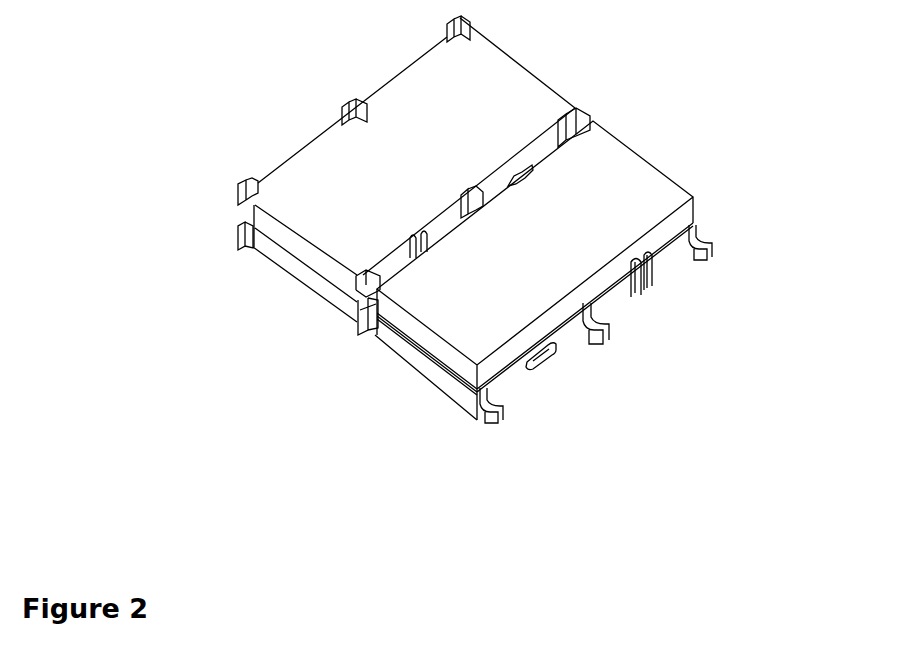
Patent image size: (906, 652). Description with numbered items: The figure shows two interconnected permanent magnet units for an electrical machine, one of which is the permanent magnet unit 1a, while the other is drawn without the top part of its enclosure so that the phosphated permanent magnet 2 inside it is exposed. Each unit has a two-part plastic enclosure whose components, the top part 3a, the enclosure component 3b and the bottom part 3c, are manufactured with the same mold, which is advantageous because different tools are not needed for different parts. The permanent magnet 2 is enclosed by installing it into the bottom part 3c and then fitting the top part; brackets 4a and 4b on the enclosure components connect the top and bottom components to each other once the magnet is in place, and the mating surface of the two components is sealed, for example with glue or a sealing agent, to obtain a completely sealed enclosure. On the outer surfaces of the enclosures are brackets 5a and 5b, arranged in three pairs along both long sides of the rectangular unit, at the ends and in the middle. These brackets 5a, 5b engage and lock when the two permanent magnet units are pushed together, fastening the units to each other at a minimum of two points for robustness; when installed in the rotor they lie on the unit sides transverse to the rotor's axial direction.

The permanent magnet unit 1a is at (324, 211).
The permanent magnet 2 is at (607, 328).
The top part of plastic enclosure 3a is at (437, 110).
The enclosure component 3b is at (293, 268).
The bottom part of plastic enclosure 3c is at (458, 387).
The bracket 4a is at (548, 357).
The bracket 4b is at (648, 288).
The bracket 5a is at (493, 427).
The bracket 5b is at (243, 242).